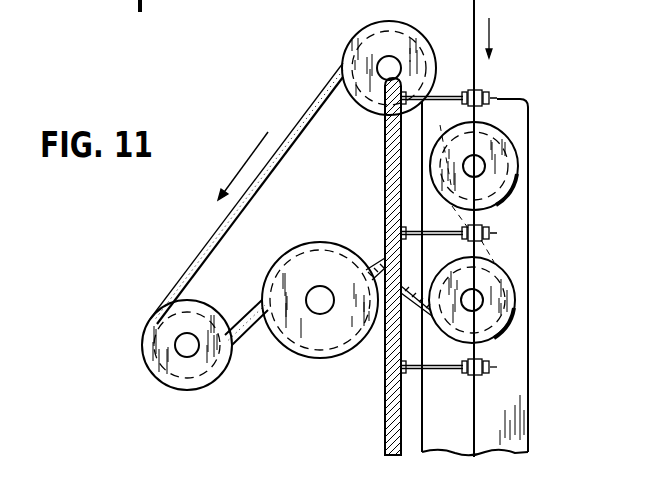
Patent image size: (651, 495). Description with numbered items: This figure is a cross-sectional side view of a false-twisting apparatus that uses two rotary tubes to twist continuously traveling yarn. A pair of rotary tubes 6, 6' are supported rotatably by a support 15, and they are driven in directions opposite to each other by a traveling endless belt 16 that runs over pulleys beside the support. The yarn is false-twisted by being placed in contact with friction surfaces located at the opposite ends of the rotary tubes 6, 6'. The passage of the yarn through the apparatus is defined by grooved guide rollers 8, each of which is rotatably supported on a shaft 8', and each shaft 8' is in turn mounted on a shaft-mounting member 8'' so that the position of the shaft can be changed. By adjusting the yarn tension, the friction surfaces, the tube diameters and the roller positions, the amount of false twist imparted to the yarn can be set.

The traveling endless belt 16 is at (296, 122).
The support 15 is at (529, 126).
The rotary tube 6 is at (491, 166).
The rotary tube 6' is at (478, 287).
The grooved guide roller 8 is at (481, 384).
The shaft 8' is at (432, 387).
The shaft-mounting member 8'' is at (373, 264).